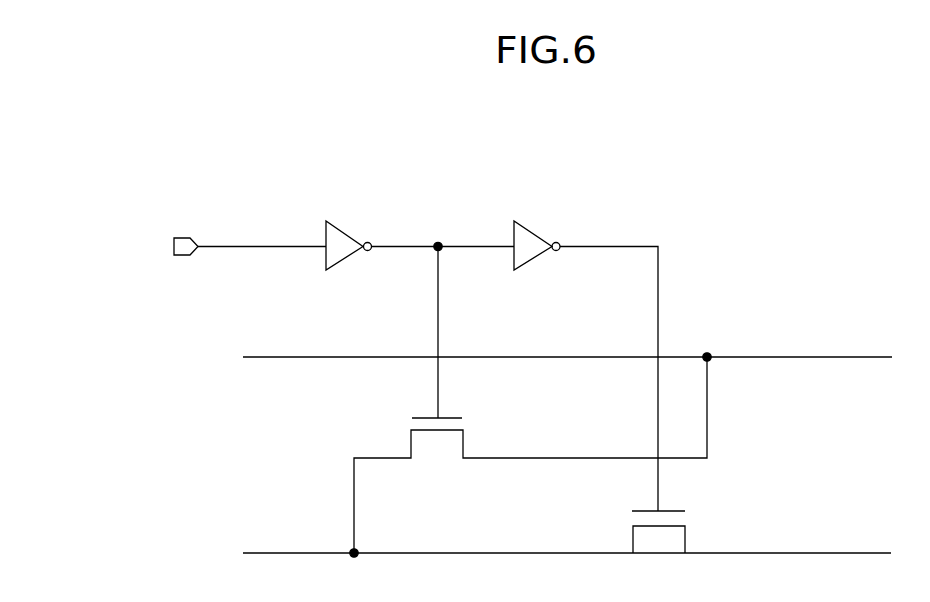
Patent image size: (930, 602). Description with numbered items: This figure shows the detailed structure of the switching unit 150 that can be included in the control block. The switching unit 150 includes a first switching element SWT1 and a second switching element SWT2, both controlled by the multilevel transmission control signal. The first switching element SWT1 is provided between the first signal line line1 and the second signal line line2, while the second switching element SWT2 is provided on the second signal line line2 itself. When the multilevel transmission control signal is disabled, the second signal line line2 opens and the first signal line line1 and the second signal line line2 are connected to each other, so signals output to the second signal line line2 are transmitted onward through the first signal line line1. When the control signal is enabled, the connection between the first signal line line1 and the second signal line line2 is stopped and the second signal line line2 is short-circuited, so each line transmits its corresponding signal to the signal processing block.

The switching unit 150 is at (864, 118).
The first switching element SWT1 is at (466, 427).
The second switching element SWT2 is at (686, 521).
The first signal line line1 is at (797, 354).
The second signal line line2 is at (797, 552).